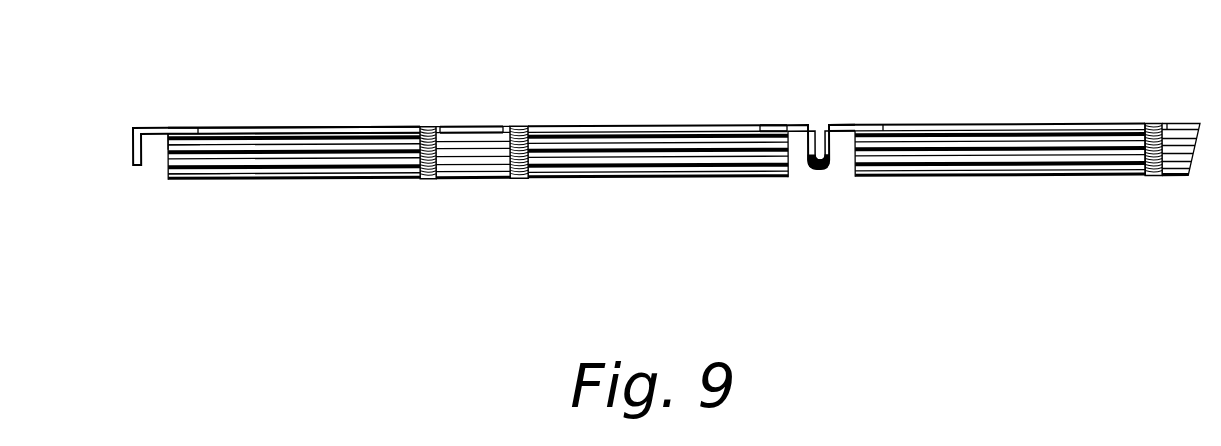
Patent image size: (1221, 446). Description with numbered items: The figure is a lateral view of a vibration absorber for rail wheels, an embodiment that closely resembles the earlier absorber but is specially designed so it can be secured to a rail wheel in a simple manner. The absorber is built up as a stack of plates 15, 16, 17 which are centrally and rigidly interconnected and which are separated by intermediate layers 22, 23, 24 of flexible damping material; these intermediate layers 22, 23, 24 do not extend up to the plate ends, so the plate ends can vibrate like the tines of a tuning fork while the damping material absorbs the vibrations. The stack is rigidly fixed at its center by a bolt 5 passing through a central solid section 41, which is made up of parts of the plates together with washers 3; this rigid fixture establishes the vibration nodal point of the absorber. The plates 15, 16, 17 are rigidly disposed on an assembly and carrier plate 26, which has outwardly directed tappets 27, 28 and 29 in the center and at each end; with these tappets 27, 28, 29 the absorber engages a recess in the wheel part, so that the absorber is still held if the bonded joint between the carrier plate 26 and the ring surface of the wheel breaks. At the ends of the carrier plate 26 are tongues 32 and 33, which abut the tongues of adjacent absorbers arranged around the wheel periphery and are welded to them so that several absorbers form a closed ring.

The washers 3 is at (482, 138).
The bolt 5 is at (428, 130).
The plate 15 is at (238, 141).
The plate 16 is at (263, 156).
The plate 17 is at (290, 172).
The intermediate layer 22 is at (170, 138).
The intermediate layer 23 is at (168, 148).
The intermediate layer 24 is at (193, 170).
The assembly and carrier plate 26 is at (293, 130).
The tappet 27 is at (185, 130).
The tappet 28 is at (455, 132).
The tappet 29 is at (770, 128).
The tongue 32 is at (808, 126).
The tongue 33 is at (132, 158).
The central solid section 41 is at (501, 108).